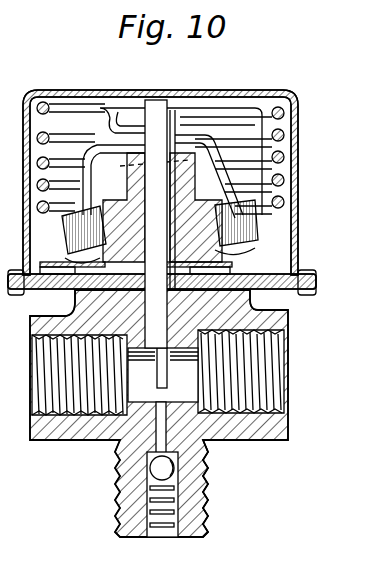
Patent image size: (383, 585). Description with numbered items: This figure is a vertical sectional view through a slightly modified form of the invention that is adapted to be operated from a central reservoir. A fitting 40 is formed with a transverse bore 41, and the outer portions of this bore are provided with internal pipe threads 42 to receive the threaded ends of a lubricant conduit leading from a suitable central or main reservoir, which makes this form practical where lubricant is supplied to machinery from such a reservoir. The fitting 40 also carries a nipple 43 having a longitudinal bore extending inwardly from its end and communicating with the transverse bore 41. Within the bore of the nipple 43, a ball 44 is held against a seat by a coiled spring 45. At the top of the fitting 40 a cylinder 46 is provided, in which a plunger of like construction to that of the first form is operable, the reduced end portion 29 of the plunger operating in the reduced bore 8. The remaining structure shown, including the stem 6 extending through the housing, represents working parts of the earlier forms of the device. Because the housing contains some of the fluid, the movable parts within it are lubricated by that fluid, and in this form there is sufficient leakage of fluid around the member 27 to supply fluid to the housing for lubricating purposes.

The stem 6 is at (160, 264).
The reduced bore 8 is at (155, 440).
The member 27 is at (168, 130).
The reduced end portion 29 is at (157, 375).
The fitting 40 is at (272, 440).
The transverse bore 41 is at (163, 375).
The internal pipe threads 42 is at (285, 370).
The nipple 43 is at (225, 488).
The ball 44 is at (150, 472).
The coiled spring 45 is at (162, 530).
The cylinder 46 is at (162, 266).